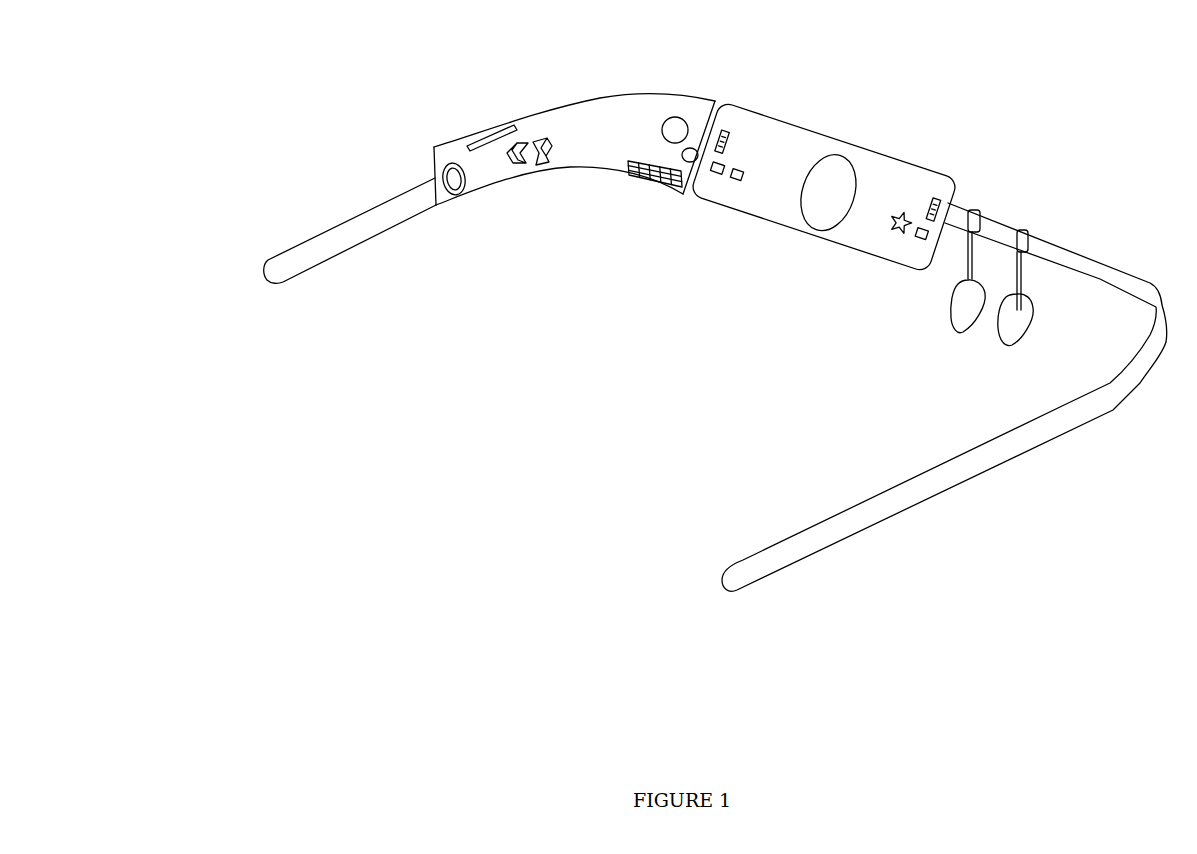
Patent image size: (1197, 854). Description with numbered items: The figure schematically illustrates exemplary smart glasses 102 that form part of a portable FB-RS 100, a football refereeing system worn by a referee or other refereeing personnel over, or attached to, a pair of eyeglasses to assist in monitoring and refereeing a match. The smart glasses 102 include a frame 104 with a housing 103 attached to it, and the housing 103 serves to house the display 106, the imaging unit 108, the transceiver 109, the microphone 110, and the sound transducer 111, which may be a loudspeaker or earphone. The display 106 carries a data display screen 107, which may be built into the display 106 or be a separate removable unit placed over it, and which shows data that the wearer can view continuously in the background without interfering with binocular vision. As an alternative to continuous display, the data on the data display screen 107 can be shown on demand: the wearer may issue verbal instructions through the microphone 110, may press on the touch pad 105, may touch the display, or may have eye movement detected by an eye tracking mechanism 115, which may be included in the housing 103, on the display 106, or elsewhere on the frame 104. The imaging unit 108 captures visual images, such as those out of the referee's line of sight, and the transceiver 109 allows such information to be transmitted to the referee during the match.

The portable FB-RS 100 is at (142, 82).
The smart glasses 102 is at (1070, 112).
The housing 103 is at (605, 97).
The frame 104 is at (978, 522).
The touch pad 105 is at (542, 224).
The display 106 is at (805, 125).
The data display screen 107 is at (749, 268).
The imaging unit 108 is at (679, 123).
The transceiver 109 is at (488, 138).
The microphone 110 is at (623, 233).
The sound transducer 111 is at (457, 240).
The eye tracking mechanism 115 is at (697, 148).